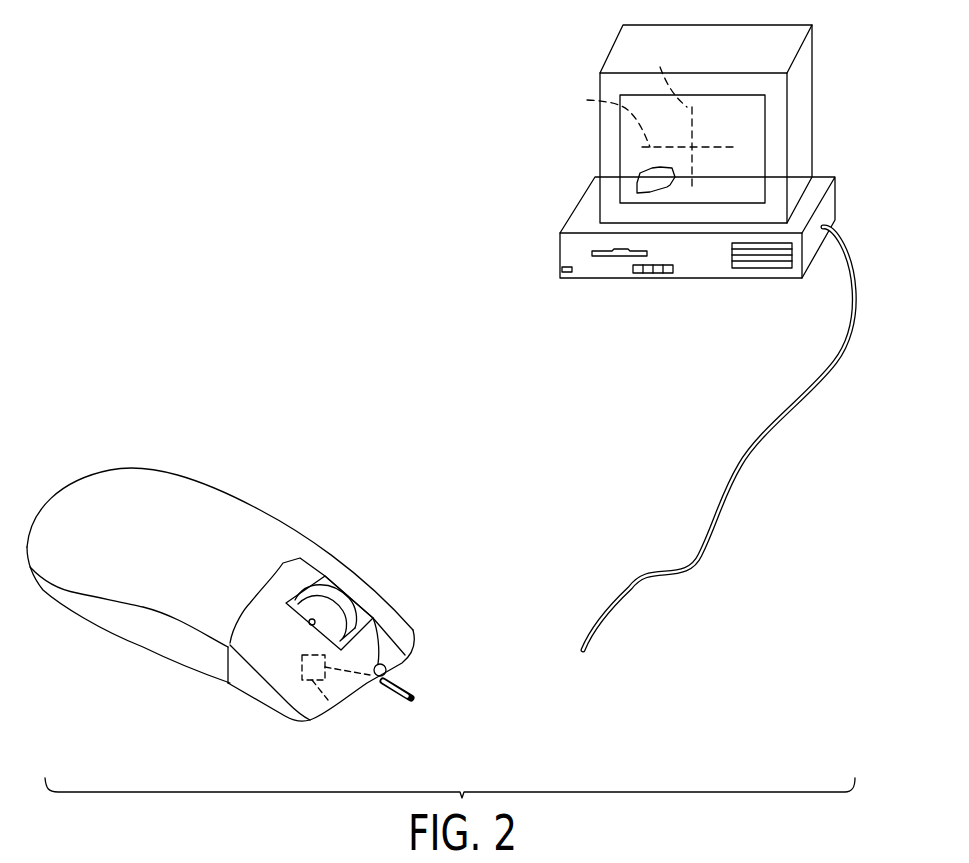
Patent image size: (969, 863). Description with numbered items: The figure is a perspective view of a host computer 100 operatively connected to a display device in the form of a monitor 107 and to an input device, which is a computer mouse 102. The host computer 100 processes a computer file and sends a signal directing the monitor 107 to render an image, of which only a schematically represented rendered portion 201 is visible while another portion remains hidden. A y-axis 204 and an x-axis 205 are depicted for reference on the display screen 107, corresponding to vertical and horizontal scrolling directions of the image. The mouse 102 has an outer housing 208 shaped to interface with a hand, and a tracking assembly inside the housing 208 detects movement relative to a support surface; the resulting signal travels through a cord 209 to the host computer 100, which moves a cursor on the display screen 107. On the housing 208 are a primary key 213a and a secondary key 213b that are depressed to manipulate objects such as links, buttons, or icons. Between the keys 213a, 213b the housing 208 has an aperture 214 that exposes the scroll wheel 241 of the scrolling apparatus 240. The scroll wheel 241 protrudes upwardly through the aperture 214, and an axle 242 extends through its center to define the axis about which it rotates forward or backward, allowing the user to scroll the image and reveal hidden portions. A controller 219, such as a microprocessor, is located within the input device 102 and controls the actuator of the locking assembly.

The host computer 100 is at (723, 151).
The monitor 107 is at (798, 83).
The y-axis 204 is at (667, 71).
The x-axis 205 is at (601, 117).
The rendered portion 201 is at (637, 185).
The cord 209 is at (801, 394).
The computer mouse 102 is at (242, 596).
The outer housing 208 is at (160, 592).
The primary key 213a is at (347, 565).
The secondary key 213b is at (267, 663).
The scrolling apparatus 240 is at (333, 578).
The aperture 214 is at (367, 617).
The axle 242 is at (308, 622).
The scroll wheel 241 is at (407, 660).
The controller 219 is at (337, 707).